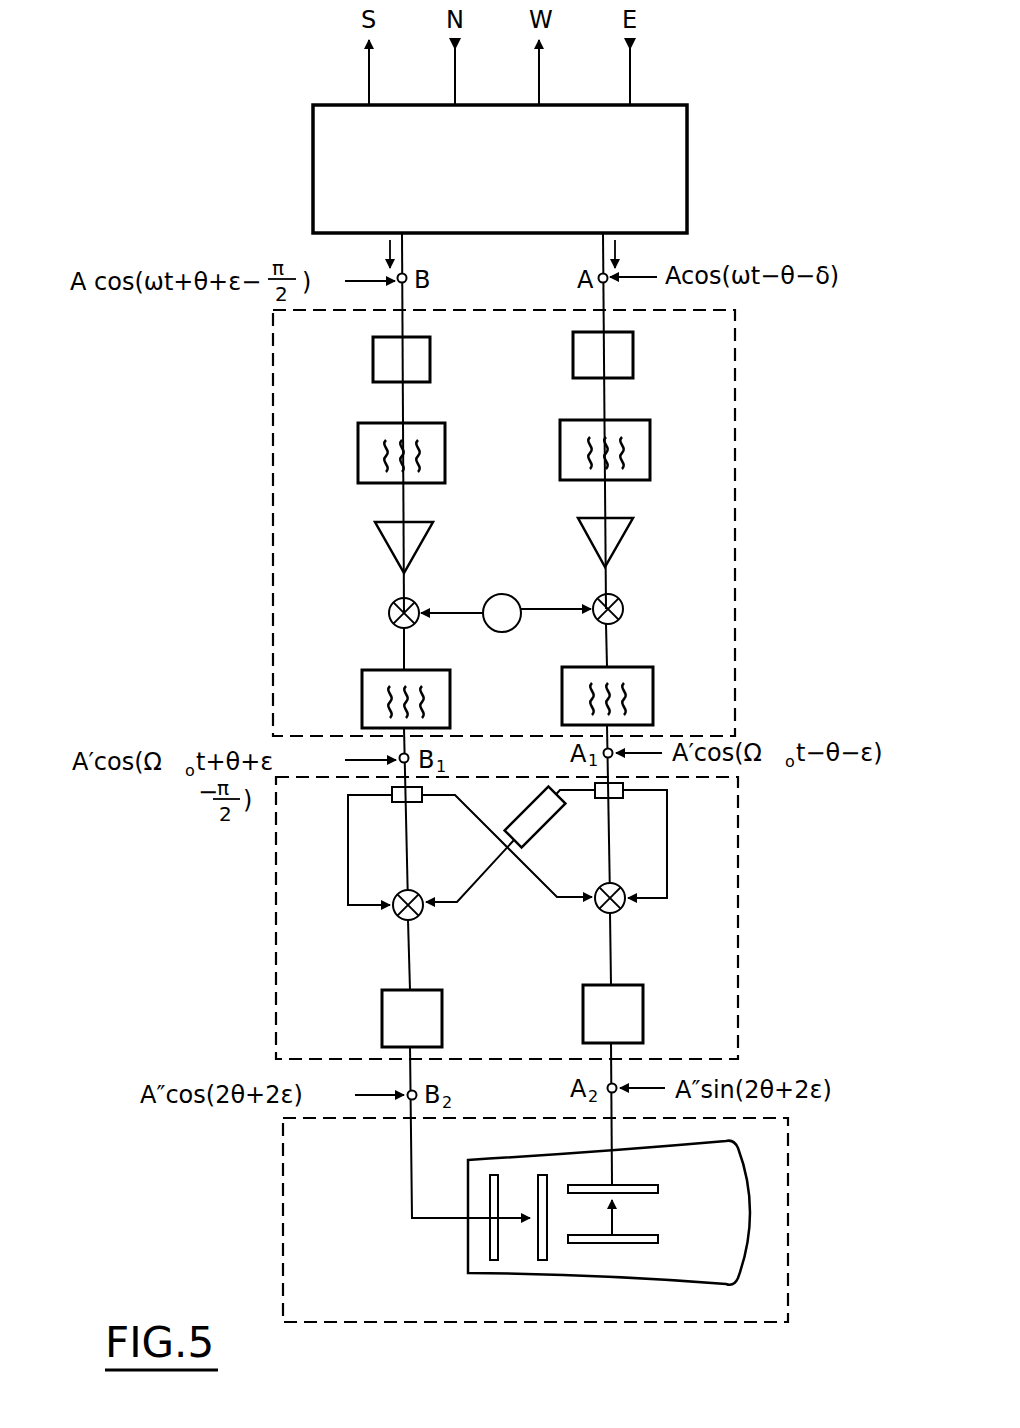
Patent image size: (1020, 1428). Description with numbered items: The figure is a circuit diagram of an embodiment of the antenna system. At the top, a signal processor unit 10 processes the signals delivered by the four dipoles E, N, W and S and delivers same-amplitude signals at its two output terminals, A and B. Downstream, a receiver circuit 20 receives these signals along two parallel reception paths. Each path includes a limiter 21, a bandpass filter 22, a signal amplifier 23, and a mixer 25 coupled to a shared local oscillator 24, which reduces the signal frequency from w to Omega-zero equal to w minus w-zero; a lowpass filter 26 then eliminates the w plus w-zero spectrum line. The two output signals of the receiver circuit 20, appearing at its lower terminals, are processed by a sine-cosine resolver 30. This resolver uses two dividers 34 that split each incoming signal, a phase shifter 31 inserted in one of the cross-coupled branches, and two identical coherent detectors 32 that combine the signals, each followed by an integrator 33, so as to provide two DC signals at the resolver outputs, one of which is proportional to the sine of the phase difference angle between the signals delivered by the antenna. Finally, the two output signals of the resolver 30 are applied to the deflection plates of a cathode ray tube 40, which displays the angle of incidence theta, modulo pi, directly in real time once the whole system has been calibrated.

The signal processor unit 10 is at (687, 165).
The receiver circuit 20 is at (735, 515).
The limiter 21 is at (573, 357).
The bandpass filter 22 is at (560, 450).
The signal amplifier 23 is at (580, 535).
The local oscillator 24 is at (514, 628).
The mixer 25 is at (389, 615).
The lowpass filter 26 is at (562, 704).
The sine-cosine resolver 30 is at (740, 900).
The phase shifter 31 is at (550, 833).
The coherent detector 32 is at (418, 917).
The integrator 33 is at (583, 1018).
The divider 34 is at (407, 802).
The cathode ray tube 40 is at (788, 1200).